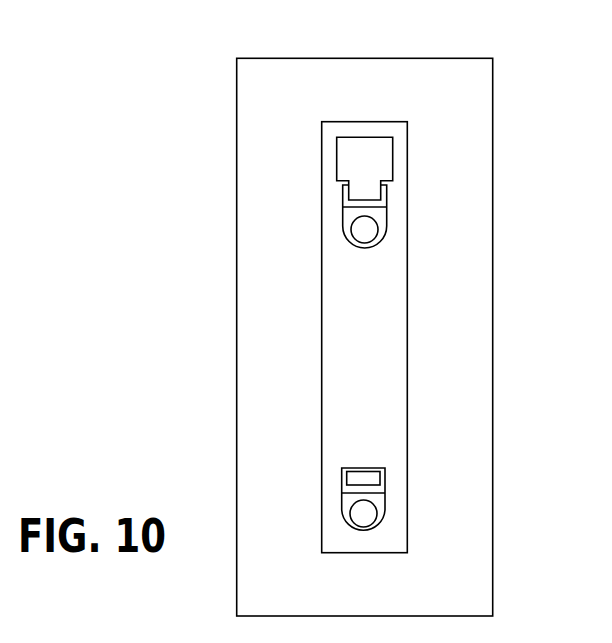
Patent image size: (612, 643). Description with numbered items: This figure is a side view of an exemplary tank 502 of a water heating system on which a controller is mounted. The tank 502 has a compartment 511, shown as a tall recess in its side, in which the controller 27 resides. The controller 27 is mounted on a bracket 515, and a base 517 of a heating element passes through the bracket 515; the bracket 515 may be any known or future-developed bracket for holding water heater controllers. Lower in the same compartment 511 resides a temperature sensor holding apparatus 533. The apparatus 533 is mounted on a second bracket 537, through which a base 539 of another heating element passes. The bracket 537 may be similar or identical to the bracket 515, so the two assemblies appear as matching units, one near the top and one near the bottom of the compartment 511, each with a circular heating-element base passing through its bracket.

The tank 502 is at (387, 58).
The compartment 511 is at (383, 108).
The controller 27 is at (380, 155).
The bracket 515 is at (382, 211).
The base of a heating element 517 is at (365, 230).
The temperature sensor holding apparatus 533 is at (368, 472).
The bracket 537 is at (381, 501).
The base of another heating element 539 is at (365, 515).